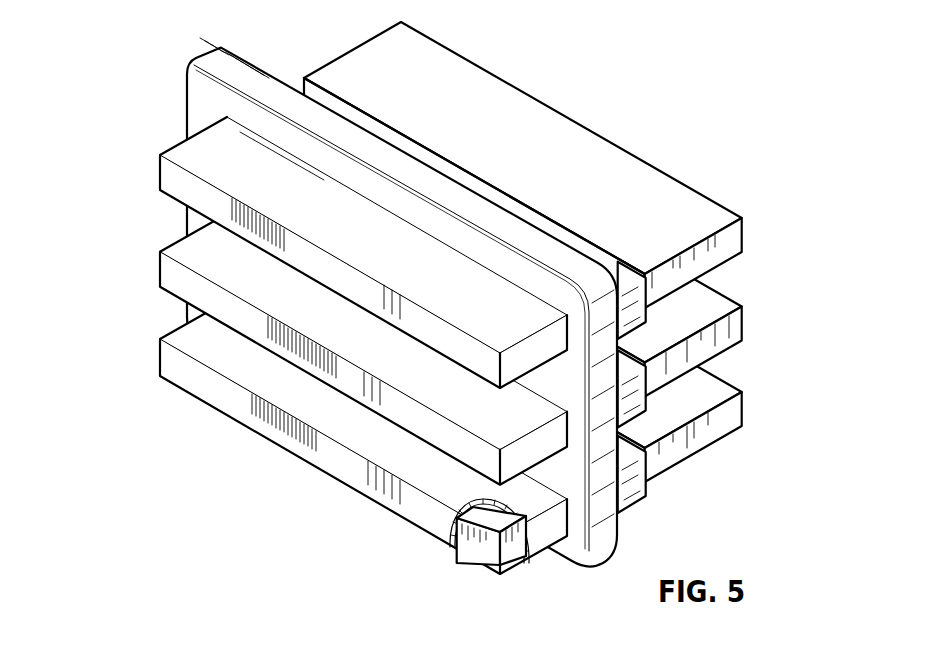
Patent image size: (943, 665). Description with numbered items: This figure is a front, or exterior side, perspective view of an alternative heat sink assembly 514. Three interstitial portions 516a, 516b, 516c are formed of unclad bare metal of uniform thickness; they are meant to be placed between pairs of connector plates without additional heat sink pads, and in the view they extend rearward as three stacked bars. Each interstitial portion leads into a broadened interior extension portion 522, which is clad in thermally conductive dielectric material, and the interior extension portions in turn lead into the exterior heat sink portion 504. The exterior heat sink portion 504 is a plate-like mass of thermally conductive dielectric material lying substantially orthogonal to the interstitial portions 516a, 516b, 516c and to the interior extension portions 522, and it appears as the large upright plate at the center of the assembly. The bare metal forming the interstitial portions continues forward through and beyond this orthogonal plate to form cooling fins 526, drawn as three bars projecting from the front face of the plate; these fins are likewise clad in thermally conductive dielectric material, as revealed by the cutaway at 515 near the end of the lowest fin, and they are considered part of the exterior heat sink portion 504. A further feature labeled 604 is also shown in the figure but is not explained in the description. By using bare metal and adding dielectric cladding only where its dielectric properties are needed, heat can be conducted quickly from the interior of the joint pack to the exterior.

The exterior heat sink portion 504 is at (297, 95).
The heat sink assembly 514 is at (601, 267).
The interstitial portion 516a is at (731, 238).
The interstitial portion 516b is at (731, 327).
The interstitial portion 516c is at (731, 410).
The interior extension portion 522 is at (493, 192).
The cooling fins 526 is at (160, 139).
The cutaway 515 is at (472, 558).
The cable clip 604 is at (512, 664).